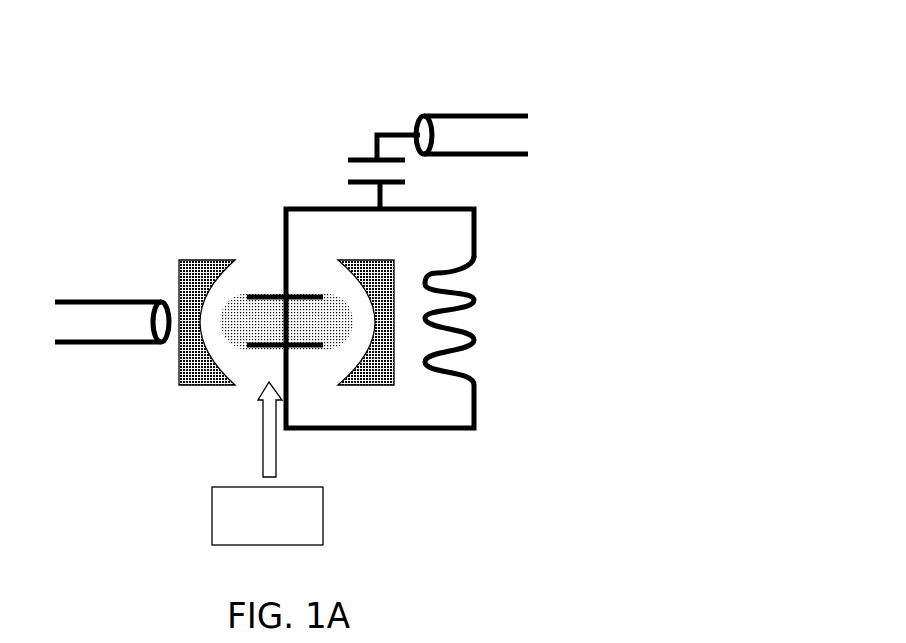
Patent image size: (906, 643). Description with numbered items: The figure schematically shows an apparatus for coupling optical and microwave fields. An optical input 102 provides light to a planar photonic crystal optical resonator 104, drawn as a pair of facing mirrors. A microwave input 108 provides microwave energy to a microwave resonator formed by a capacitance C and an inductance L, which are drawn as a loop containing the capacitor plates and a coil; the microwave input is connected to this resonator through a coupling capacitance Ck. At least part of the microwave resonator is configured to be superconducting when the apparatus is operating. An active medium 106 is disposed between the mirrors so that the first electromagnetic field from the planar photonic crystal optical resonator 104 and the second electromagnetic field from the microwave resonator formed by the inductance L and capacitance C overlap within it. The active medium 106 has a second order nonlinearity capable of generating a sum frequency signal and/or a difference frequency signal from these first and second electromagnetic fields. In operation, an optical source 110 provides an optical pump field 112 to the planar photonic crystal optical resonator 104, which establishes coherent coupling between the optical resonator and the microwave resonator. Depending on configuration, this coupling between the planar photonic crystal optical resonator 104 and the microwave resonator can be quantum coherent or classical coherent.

The optical input 102 is at (102, 299).
The planar photonic crystal optical resonator 104 is at (195, 237).
The active medium 106 is at (243, 306).
The microwave input 108 is at (473, 113).
The optical source 110 is at (292, 532).
The optical pump field 112 is at (277, 458).
The capacitance C is at (257, 348).
The coupling capacitance Ck is at (353, 158).
The inductance L is at (460, 348).